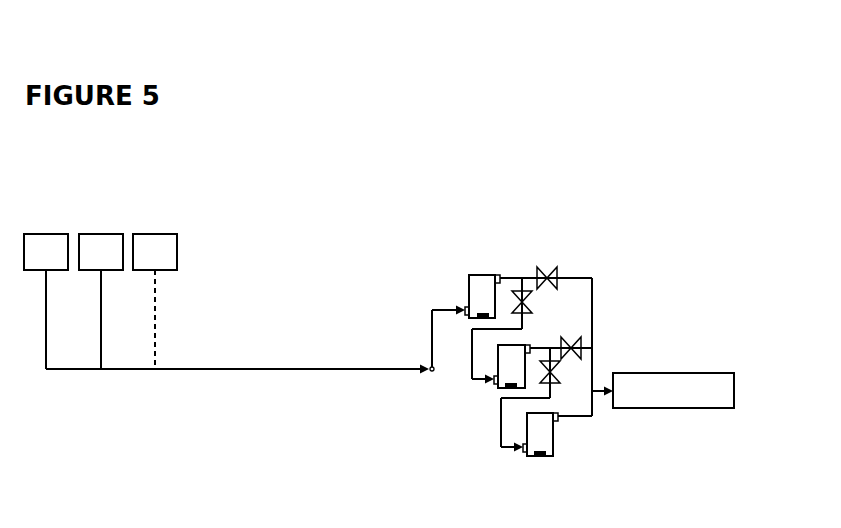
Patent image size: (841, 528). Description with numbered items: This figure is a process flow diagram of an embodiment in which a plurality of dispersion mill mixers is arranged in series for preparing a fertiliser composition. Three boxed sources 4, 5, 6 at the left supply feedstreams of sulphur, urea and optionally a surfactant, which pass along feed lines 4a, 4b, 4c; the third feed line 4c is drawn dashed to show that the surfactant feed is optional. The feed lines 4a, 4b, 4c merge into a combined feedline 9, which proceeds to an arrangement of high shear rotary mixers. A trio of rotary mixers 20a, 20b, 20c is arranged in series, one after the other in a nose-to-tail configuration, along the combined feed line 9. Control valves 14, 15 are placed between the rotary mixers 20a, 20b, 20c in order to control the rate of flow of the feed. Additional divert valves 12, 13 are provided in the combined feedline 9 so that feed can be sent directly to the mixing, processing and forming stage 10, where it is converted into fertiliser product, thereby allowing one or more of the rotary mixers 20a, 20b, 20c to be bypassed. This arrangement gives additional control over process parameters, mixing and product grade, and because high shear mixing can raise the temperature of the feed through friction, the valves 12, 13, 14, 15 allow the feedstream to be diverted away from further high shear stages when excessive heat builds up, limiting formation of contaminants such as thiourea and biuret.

The feed line 4 is at (155, 252).
The feed stream 5 is at (101, 252).
The feed stream 6 is at (46, 252).
The feed line 4a is at (63, 319).
The feed line 4b is at (124, 319).
The feed line 4c is at (187, 319).
The combined feedline 9 is at (255, 348).
The mixing, processing and forming stage 10 is at (673, 390).
The divert valve 12 is at (692, 275).
The divert valve 13 is at (722, 363).
The control valve 14 is at (677, 322).
The control valve 15 is at (715, 411).
The rotary mixer 20a is at (544, 325).
The rotary mixer 20b is at (576, 394).
The rotary mixer 20c is at (609, 454).